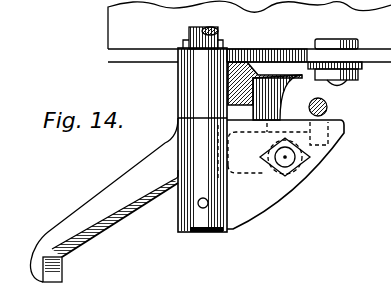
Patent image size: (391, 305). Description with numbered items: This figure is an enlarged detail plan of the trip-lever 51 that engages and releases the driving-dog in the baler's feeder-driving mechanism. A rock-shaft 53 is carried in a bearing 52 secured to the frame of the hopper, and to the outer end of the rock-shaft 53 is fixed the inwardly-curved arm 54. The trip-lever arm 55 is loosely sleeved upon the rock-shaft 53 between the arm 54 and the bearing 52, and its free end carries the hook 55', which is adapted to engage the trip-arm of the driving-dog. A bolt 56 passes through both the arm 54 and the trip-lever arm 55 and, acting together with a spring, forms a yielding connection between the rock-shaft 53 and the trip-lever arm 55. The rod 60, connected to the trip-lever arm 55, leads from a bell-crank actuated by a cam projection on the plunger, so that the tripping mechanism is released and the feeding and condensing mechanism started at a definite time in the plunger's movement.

The trip-lever 51 is at (180, 184).
The bearing 52 is at (178, 80).
The rock-shaft 53 is at (218, 33).
The inwardly-curved arm 54 is at (264, 207).
The trip-lever arm 55 is at (104, 200).
The hook 55' is at (68, 275).
The bolt 56 is at (293, 160).
The rod 60 is at (327, 106).